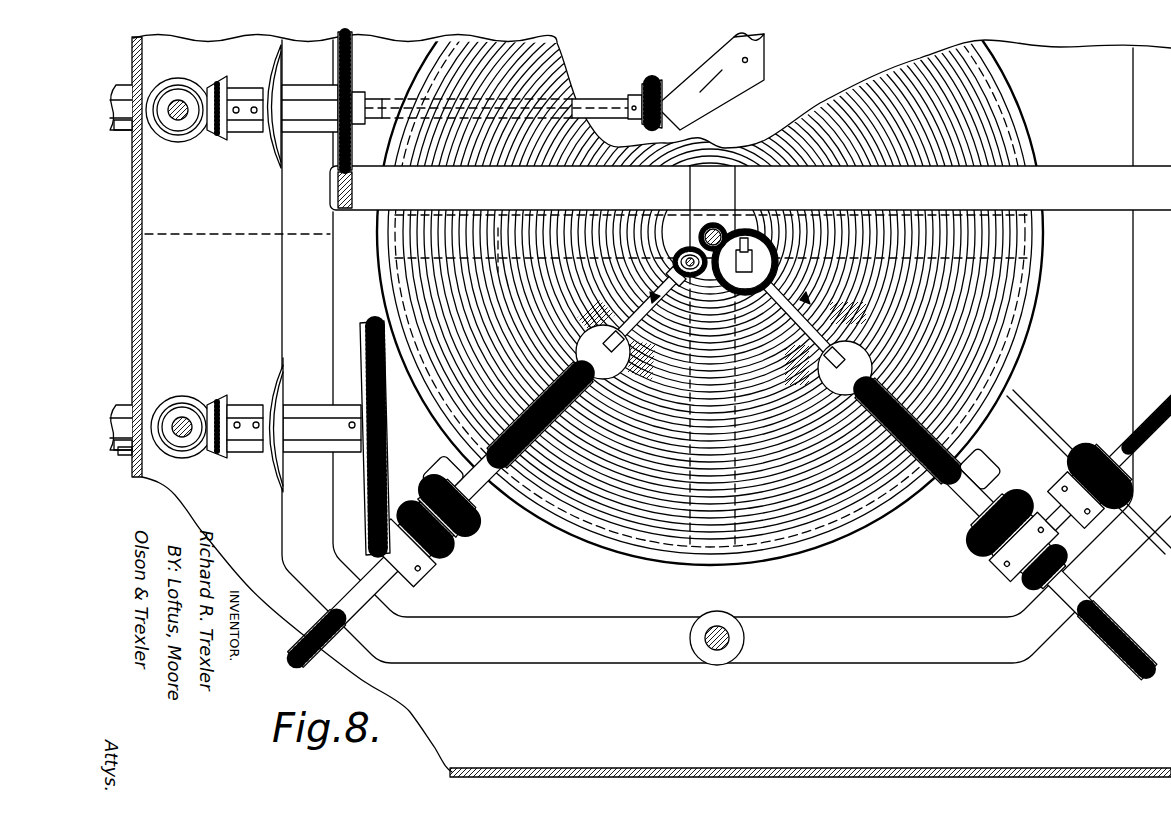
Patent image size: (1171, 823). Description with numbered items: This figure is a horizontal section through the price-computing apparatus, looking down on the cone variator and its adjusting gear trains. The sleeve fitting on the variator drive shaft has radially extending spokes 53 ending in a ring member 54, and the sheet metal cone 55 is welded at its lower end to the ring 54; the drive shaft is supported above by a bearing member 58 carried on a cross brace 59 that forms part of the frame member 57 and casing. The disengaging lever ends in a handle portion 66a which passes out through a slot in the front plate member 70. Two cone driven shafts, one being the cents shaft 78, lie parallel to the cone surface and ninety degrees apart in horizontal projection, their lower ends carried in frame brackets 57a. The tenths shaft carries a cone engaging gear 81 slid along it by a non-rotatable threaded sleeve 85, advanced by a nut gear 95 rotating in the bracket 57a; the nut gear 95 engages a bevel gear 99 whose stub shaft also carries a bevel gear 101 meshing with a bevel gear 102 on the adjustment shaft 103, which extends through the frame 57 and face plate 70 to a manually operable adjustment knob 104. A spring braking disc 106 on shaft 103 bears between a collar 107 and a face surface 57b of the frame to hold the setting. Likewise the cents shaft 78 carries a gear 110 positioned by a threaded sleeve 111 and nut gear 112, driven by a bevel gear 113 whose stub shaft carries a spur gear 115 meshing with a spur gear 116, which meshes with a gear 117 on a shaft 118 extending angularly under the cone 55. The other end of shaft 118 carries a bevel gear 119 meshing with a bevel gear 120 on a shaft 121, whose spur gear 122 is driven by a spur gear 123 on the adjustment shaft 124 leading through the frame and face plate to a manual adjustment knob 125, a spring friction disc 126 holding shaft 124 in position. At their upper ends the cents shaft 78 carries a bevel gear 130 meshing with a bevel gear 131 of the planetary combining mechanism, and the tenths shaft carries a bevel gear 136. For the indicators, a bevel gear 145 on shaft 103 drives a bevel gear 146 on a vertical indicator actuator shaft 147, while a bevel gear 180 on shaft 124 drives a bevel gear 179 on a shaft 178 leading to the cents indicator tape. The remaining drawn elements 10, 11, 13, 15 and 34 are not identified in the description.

The shaft 10 is at (650, 306).
The direction arrow 11 is at (662, 284).
The hub socket 13 is at (713, 370).
The threaded screw shaft 15 is at (500, 480).
The pivot pin 34 is at (690, 638).
The spokes 53 is at (472, 292).
The ring member 54 is at (591, 556).
The sheet metal cone 55 is at (997, 119).
The frame member 57 is at (296, 289).
The frame brackets 57a is at (455, 469).
The face surface 57b is at (282, 362).
The bearing member 58 is at (727, 192).
The cross brace 59 is at (509, 172).
The handle portion 66a is at (175, 240).
The front plate member 70 is at (141, 318).
The cone driven shaft 78 is at (810, 316).
The cone engaging gear 81 is at (578, 347).
The threaded sleeve 85 is at (374, 670).
The nut gear 95 is at (468, 533).
The bevel gear 99 is at (452, 552).
The bevel gear 101 is at (402, 579).
The bevel gear 102 is at (392, 392).
The adjustment shaft 103 is at (115, 410).
The adjustment knob 104 is at (140, 471).
The spring braking disc 106 is at (270, 480).
The collar 107 is at (240, 404).
The gear 110 is at (860, 350).
The threaded sleeve 111 is at (968, 407).
The nut gear 112 is at (968, 540).
The bevel gear 113 is at (975, 560).
The spur gear 115 is at (992, 572).
The spur gear 116 is at (1150, 422).
The gear 117 is at (1077, 492).
The shaft 118 is at (1088, 369).
The bevel gear 119 is at (668, 60).
The bevel gear 120 is at (640, 127).
The shaft 121 is at (400, 91).
The spur gear 122 is at (382, 157).
The spur gear 123 is at (353, 60).
The adjustment shaft 124 is at (116, 92).
The manual adjustment knob 125 is at (121, 132).
The spring friction disc 126 is at (268, 142).
The bevel gear 130 is at (766, 246).
The bevel gear 131 is at (706, 226).
The bevel gear 136 is at (676, 252).
The bevel gear 145 is at (212, 400).
The bevel gear 146 is at (180, 398).
The vertical indicator actuator shaft 147 is at (190, 440).
The shaft 178 is at (182, 103).
The bevel gear 179 is at (185, 142).
The bevel gear 180 is at (215, 131).